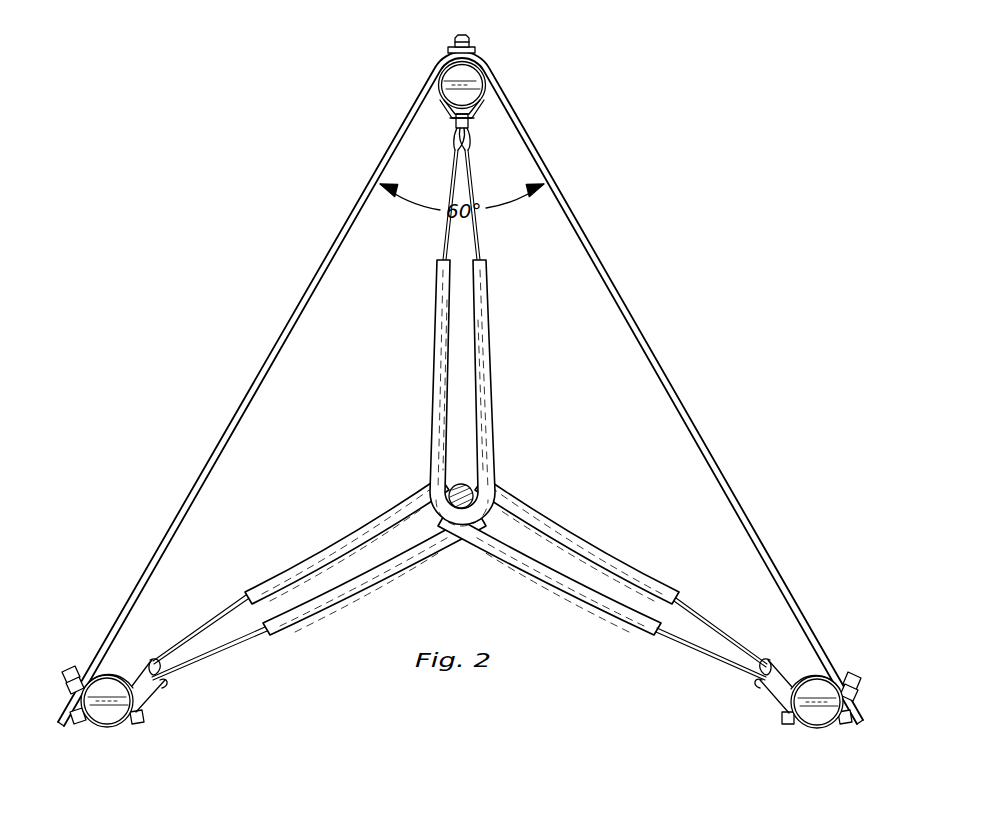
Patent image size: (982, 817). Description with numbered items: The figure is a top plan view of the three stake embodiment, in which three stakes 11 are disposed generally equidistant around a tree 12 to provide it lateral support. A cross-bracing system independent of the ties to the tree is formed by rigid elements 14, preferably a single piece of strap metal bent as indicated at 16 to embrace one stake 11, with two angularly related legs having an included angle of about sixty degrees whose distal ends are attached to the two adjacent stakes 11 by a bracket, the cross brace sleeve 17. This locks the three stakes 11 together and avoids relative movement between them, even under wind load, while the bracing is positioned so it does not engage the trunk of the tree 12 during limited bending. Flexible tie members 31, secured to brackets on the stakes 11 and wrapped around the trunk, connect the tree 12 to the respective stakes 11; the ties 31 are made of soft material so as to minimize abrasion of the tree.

The stake 11 is at (452, 80).
The tree 12 is at (472, 490).
The rigid element 14 is at (262, 362).
The bend 16 is at (478, 56).
The cross brace sleeve 17 is at (452, 47).
The flexible tie member 31 is at (398, 414).